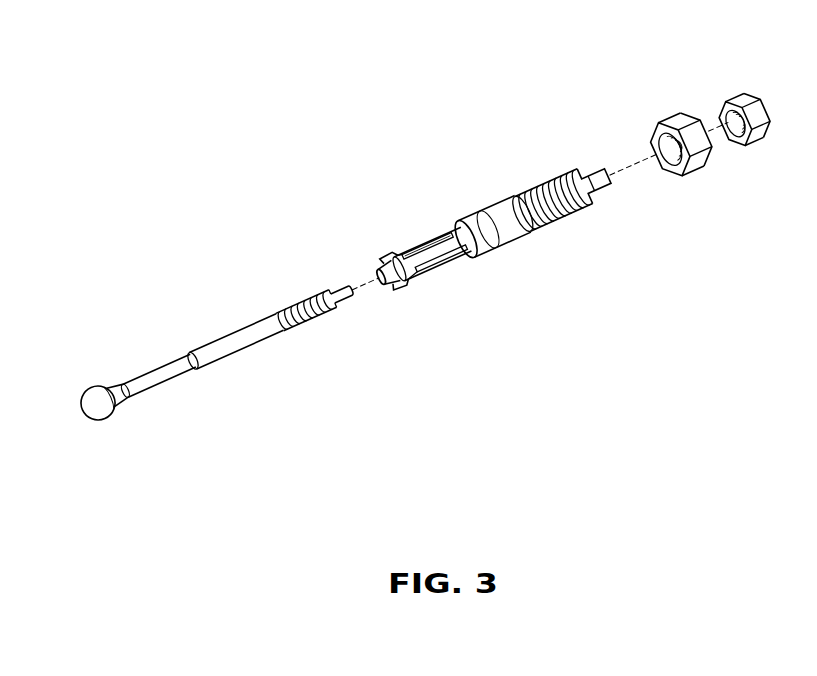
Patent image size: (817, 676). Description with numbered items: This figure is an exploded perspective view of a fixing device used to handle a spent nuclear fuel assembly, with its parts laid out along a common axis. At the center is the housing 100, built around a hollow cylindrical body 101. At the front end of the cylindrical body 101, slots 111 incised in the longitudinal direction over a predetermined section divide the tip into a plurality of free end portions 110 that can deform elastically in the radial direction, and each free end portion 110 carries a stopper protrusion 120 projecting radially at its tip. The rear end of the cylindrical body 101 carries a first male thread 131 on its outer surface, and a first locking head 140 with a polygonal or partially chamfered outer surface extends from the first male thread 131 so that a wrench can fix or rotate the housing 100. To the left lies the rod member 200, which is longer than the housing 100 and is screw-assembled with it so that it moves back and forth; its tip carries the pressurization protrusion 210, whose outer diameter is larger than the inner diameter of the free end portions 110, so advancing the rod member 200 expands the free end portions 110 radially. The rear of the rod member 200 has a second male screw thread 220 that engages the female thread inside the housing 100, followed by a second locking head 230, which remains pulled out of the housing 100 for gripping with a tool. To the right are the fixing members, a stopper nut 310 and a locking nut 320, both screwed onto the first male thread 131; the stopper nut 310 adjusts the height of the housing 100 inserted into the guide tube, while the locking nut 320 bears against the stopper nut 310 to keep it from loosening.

The housing 100 is at (470, 180).
The hollow cylindrical body 101 is at (512, 243).
The free end portions 110 is at (413, 250).
The slots 111 is at (408, 240).
The stopper protrusion 120 is at (408, 297).
The first male thread 131 is at (535, 203).
The first locking head 140 is at (597, 197).
The rod member 200 is at (200, 299).
The pressurization protrusion 210 is at (100, 387).
The second male screw thread 220 is at (298, 300).
The second locking head 230 is at (341, 308).
The stopper nut 310 is at (672, 114).
The locking nut 320 is at (750, 95).